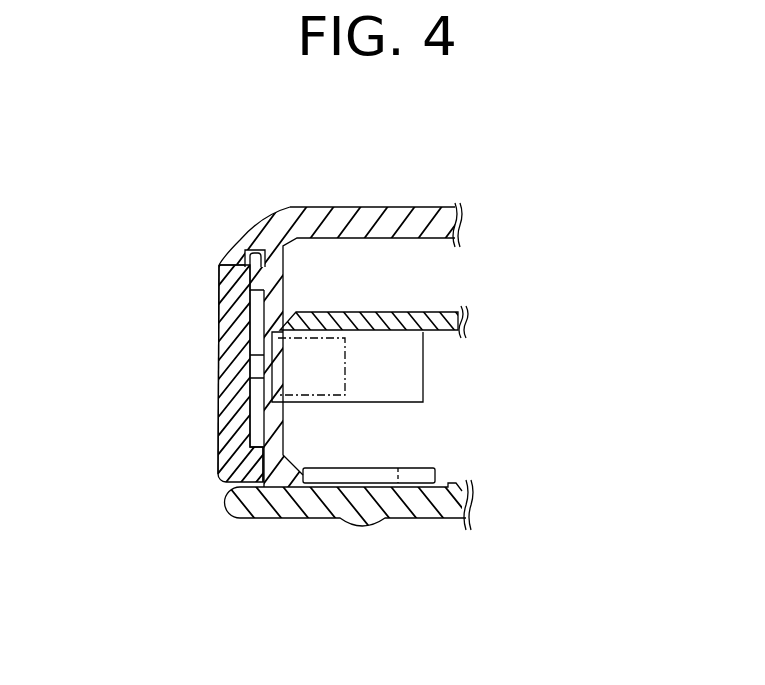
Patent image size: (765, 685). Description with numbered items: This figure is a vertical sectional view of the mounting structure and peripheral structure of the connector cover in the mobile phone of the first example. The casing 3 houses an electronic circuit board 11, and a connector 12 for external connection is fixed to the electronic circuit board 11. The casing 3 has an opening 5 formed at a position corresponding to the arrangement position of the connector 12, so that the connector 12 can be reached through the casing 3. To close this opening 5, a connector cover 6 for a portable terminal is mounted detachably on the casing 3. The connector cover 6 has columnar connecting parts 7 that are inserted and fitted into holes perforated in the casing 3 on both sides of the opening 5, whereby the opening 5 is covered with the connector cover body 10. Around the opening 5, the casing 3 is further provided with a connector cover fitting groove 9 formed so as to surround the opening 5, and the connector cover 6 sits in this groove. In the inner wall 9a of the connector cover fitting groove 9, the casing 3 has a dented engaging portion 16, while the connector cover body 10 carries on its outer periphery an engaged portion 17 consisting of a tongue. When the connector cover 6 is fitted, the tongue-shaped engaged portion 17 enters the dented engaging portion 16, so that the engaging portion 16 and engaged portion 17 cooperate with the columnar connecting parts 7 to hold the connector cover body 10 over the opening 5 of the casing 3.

The casing 3 is at (280, 212).
The opening 5 is at (256, 393).
The connector cover 6 is at (188, 363).
The columnar connecting part 7 is at (253, 362).
The connector cover fitting groove 9 is at (222, 448).
The inner wall 9a is at (221, 280).
The connector cover body 10 is at (250, 417).
The electronic circuit board 11 is at (424, 318).
The connector 12 is at (410, 376).
The engaging portion 16 is at (245, 238).
The engaged portion 17 is at (243, 258).